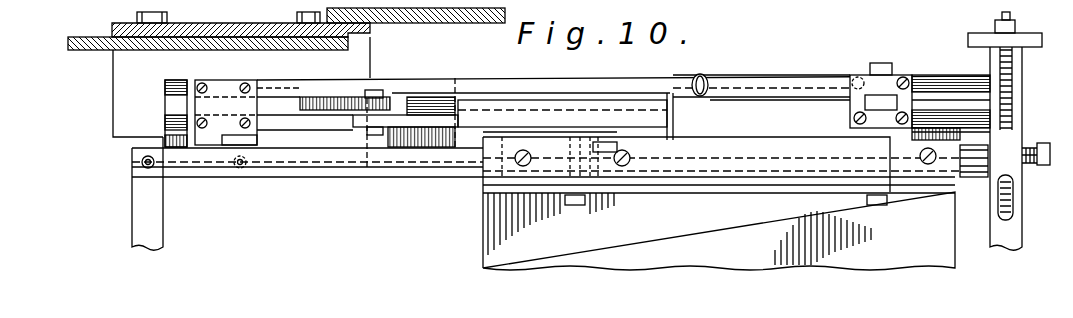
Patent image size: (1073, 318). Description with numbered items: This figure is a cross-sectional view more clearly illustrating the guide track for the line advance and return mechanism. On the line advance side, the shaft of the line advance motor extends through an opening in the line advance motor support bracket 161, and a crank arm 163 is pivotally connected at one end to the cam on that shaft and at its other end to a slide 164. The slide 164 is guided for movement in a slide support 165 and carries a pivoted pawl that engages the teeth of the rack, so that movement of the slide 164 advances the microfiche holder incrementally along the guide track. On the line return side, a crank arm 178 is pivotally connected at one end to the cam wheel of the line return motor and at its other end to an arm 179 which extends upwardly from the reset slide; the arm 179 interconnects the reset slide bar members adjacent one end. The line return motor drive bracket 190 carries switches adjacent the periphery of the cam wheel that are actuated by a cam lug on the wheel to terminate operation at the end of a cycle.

The line advance motor support bracket 161 is at (90, 37).
The line return motor drive bracket 190 is at (437, 23).
The slide support 165 is at (173, 107).
The crank arm 163 is at (345, 100).
The slide 164 is at (412, 117).
The crank arm 178 is at (763, 82).
The arm 179 is at (905, 100).